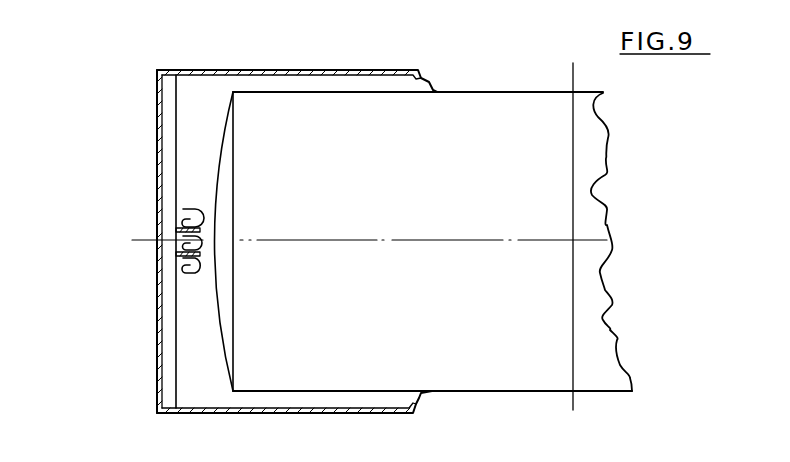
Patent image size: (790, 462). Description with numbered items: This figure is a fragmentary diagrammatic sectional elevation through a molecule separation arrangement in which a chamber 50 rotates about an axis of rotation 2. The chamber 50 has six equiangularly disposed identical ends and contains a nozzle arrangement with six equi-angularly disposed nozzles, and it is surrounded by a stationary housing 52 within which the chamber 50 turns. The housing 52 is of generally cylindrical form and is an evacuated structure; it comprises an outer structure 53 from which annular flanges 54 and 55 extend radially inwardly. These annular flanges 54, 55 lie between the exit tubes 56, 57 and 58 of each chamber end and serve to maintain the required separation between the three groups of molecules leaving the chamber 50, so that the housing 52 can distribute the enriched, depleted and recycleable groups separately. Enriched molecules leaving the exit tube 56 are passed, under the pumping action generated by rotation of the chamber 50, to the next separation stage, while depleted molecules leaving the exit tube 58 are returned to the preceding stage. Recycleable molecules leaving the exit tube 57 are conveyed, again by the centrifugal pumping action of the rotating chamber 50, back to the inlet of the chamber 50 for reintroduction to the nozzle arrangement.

The axis of rotation 2 is at (568, 80).
The chamber 50 is at (431, 197).
The stationary housing 52 is at (242, 66).
The outer structure 53 is at (152, 108).
The annular flange 54 is at (177, 228).
The annular flange 55 is at (173, 257).
The exit tube 56 is at (181, 212).
The exit tube 57 is at (173, 240).
The exit tube 58 is at (190, 268).